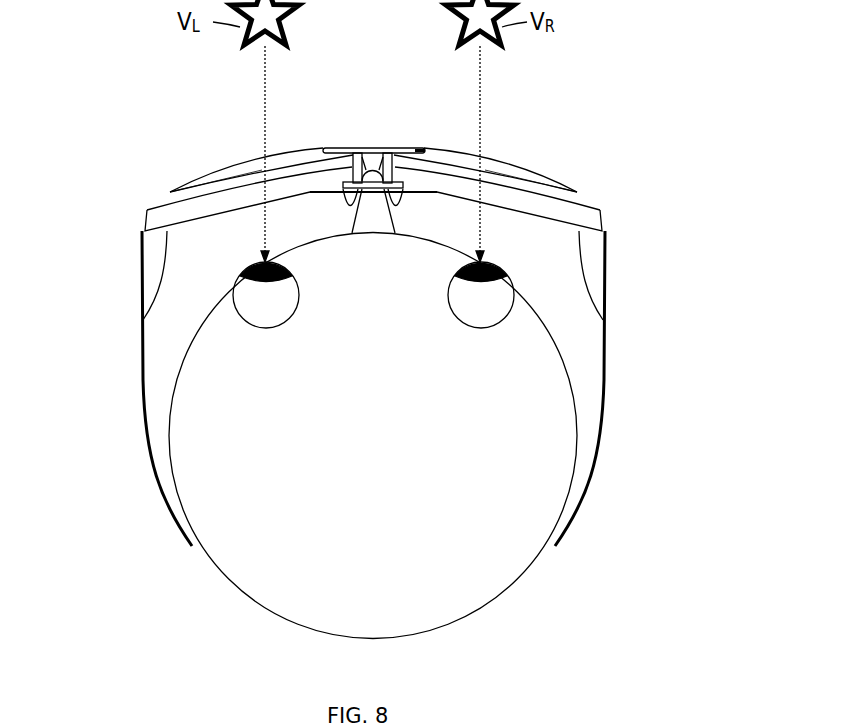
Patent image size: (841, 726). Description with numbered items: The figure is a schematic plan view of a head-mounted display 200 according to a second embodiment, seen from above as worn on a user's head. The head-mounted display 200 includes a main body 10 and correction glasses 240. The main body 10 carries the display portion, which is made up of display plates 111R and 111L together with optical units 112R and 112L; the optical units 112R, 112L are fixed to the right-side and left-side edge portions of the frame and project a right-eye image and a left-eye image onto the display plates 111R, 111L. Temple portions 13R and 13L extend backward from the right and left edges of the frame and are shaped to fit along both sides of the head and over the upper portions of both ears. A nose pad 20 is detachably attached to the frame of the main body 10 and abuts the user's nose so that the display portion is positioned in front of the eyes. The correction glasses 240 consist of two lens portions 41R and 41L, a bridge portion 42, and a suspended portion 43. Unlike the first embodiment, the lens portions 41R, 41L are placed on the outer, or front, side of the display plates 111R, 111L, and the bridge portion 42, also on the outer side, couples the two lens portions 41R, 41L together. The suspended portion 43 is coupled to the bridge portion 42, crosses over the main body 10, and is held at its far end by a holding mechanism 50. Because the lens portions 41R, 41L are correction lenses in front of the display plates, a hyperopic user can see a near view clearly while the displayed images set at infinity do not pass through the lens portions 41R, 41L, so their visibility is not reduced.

The main body 10 is at (151, 208).
The temple portion 13L is at (145, 462).
The temple portion 13R is at (602, 462).
The nose pad 20 is at (333, 193).
The lens portion 41L is at (243, 163).
The lens portion 41R is at (510, 163).
The bridge portion 42 is at (372, 148).
The suspended portion 43 is at (352, 170).
The holding mechanism 50 is at (412, 195).
The display plate 111L is at (208, 190).
The display plate 111R is at (532, 190).
The optical unit 112L is at (148, 262).
The optical unit 112R is at (599, 262).
The head-mounted display 200 is at (615, 213).
The correction glasses 240 is at (432, 139).